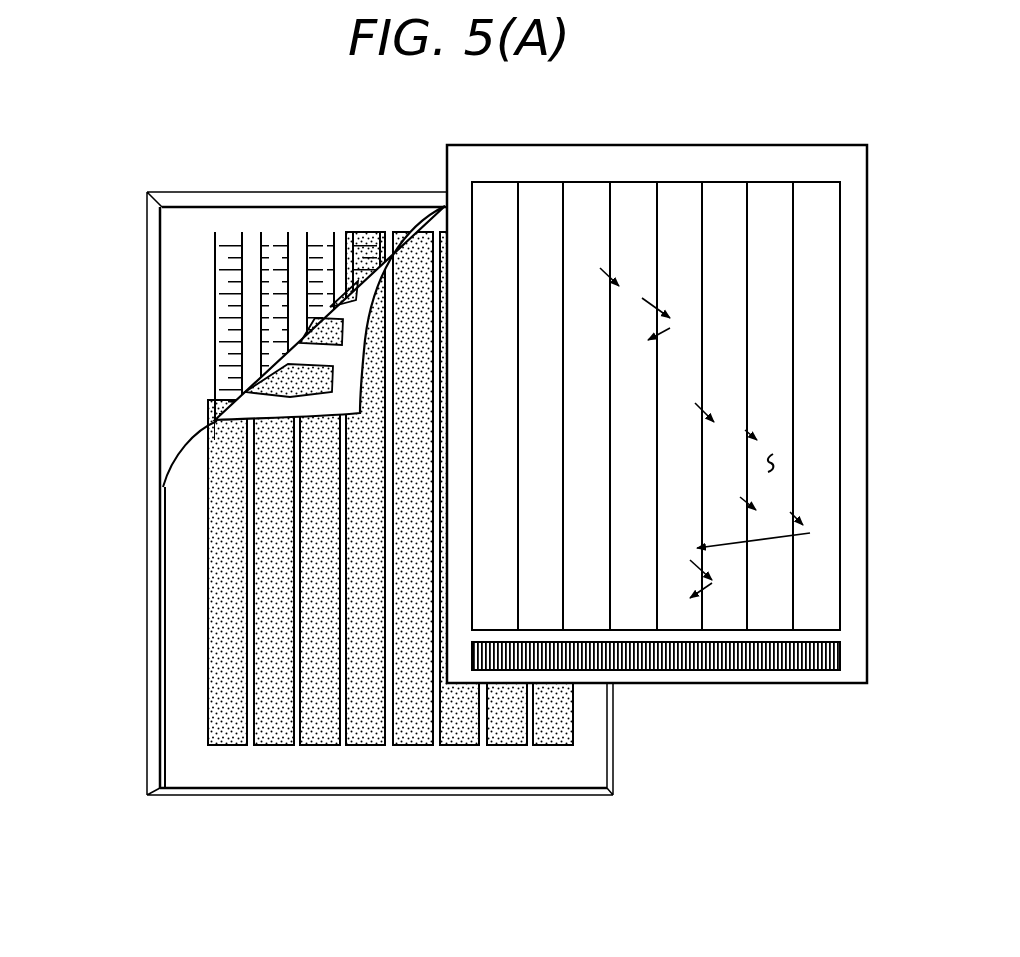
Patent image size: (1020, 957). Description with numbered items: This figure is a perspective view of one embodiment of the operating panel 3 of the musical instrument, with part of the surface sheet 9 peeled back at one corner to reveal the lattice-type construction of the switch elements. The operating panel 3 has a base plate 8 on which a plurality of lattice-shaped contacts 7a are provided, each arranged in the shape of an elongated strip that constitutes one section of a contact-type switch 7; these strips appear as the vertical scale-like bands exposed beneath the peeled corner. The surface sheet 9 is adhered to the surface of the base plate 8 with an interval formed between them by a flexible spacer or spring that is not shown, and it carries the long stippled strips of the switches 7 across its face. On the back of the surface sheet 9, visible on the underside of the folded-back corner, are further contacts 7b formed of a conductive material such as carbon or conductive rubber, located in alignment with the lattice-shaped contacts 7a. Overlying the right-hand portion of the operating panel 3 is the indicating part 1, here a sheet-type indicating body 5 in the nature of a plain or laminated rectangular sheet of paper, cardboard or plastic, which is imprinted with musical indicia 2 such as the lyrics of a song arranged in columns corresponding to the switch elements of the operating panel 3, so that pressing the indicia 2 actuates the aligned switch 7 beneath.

The indicating part 1 is at (690, 414).
The musical indicia 2 is at (838, 525).
The operating panel 3 is at (327, 456).
The sheet-type indicating body 5 is at (868, 442).
The contact-type switch 7 is at (208, 550).
The lattice-shaped contacts 7a is at (215, 244).
The contacts 7b is at (215, 380).
The base plate 8 is at (146, 277).
The surface sheet 9 is at (310, 452).